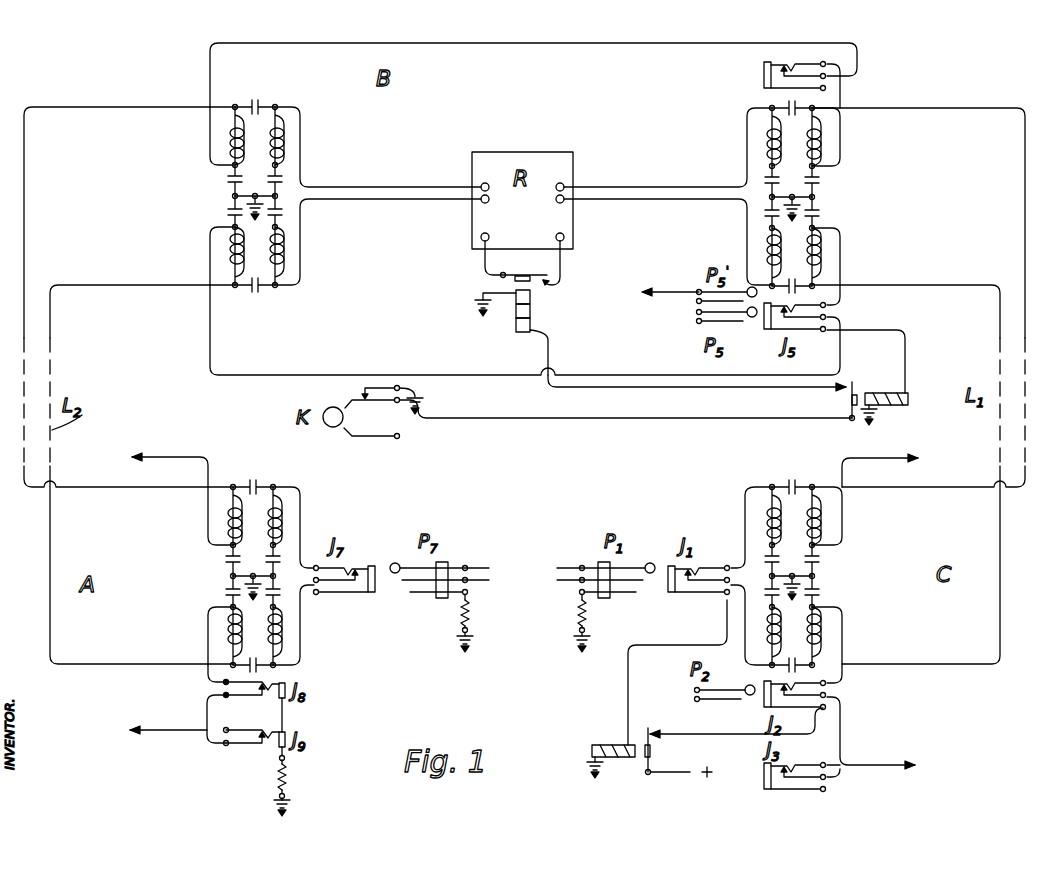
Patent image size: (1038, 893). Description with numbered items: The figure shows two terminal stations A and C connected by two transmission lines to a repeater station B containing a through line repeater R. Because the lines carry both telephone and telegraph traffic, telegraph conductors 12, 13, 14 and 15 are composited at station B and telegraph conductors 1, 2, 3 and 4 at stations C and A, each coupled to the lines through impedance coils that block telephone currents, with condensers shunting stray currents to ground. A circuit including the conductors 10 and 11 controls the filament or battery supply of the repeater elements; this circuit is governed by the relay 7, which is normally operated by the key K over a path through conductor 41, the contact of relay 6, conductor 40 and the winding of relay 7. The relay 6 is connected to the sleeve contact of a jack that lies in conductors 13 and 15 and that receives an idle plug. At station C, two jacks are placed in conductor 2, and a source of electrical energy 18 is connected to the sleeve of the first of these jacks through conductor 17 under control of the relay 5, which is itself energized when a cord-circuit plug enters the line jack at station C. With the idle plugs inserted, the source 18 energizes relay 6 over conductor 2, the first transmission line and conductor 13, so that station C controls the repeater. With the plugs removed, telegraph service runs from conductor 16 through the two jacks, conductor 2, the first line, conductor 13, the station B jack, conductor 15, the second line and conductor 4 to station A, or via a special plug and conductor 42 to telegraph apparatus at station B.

The telegraph conductor 1 is at (896, 446).
The telegraph conductor 2 is at (844, 660).
The telegraph conductor 3 is at (162, 444).
The telegraph conductor 4 is at (162, 730).
The relay 5 is at (604, 730).
The relay 6 is at (898, 412).
The relay 7 is at (532, 312).
The conductor 10 is at (482, 256).
The conductor 11 is at (560, 256).
The telegraph conductor 12 is at (842, 150).
The telegraph conductor 13 is at (842, 253).
The telegraph conductor 14 is at (210, 72).
The telegraph conductor 15 is at (210, 318).
The conductor 16 is at (870, 762).
The conductor 17 is at (726, 738).
The source of electrical energy 18 is at (682, 785).
The conductor 40 is at (684, 388).
The conductor 41 is at (612, 420).
The conductor 42 is at (680, 292).